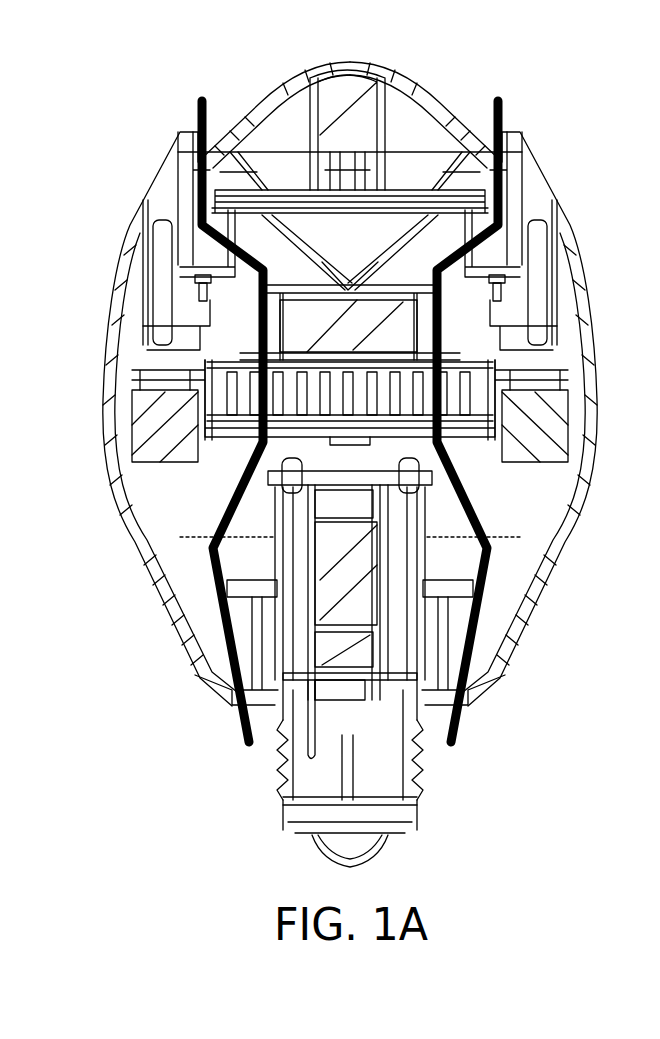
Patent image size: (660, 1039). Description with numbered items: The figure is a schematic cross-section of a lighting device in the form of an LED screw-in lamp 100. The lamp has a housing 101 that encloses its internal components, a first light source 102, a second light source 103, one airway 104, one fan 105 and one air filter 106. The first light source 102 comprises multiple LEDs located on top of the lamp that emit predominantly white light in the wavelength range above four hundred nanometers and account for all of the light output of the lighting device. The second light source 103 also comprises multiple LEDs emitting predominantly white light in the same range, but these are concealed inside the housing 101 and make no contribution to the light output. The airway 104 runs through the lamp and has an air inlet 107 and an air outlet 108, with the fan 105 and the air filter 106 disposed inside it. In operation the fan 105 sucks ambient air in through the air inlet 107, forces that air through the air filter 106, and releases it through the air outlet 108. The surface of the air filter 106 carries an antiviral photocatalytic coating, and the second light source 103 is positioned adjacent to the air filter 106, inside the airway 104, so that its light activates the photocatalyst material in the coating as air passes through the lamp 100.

The LED screw-in lamp 100 is at (345, 446).
The housing 101 is at (122, 275).
The first light source 102 is at (295, 188).
The second light source 103 is at (606, 465).
The airway 104 is at (350, 425).
The fan 105 is at (400, 330).
The air filter 106 is at (403, 392).
The air inlet 107 is at (227, 693).
The air outlet 108 is at (213, 153).